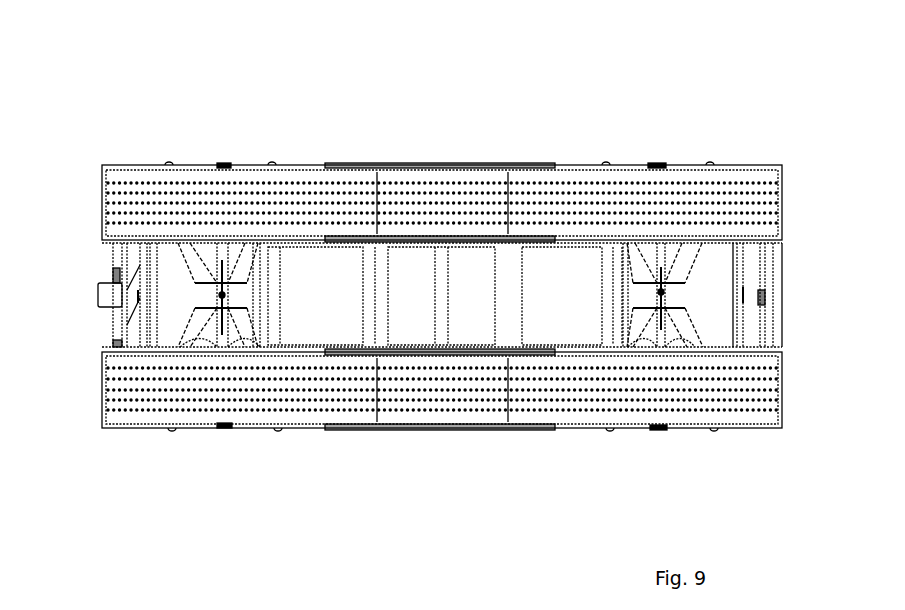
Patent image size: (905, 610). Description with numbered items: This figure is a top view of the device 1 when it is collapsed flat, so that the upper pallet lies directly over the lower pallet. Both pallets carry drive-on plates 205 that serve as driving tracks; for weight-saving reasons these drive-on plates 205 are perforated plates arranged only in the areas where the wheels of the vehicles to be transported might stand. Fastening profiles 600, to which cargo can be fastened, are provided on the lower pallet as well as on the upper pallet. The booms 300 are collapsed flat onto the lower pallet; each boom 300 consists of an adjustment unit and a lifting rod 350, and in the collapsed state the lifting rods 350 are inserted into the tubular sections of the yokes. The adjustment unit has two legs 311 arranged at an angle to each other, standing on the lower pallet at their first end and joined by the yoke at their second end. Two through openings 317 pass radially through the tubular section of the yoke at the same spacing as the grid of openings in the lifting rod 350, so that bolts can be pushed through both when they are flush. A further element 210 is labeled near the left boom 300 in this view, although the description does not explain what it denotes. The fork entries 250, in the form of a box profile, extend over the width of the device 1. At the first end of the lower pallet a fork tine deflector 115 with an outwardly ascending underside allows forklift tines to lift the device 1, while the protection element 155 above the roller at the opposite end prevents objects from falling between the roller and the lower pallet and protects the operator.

The device 1 is at (665, 140).
The fork tine deflector 115 is at (87, 302).
The protection element 155 is at (108, 295).
The drive-on plates 205 is at (216, 338).
The upper support bracket 210 is at (226, 262).
The fork entries 250 is at (513, 305).
The booms 300 is at (181, 270).
The legs 311 is at (687, 323).
The through openings 317 is at (666, 266).
The lifting rod 350 is at (653, 341).
The fastening profiles 600 is at (650, 165).